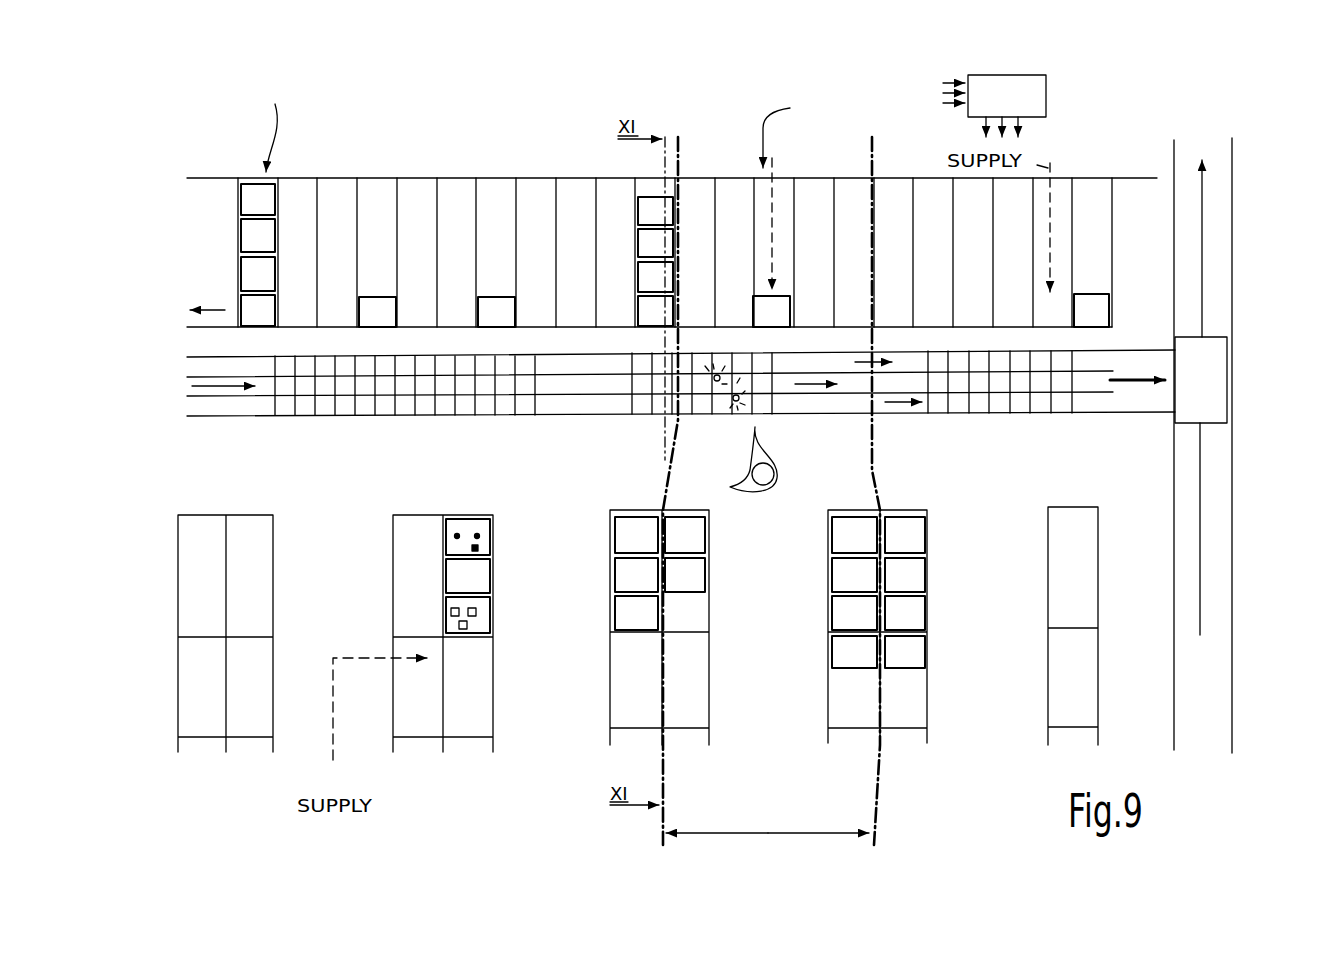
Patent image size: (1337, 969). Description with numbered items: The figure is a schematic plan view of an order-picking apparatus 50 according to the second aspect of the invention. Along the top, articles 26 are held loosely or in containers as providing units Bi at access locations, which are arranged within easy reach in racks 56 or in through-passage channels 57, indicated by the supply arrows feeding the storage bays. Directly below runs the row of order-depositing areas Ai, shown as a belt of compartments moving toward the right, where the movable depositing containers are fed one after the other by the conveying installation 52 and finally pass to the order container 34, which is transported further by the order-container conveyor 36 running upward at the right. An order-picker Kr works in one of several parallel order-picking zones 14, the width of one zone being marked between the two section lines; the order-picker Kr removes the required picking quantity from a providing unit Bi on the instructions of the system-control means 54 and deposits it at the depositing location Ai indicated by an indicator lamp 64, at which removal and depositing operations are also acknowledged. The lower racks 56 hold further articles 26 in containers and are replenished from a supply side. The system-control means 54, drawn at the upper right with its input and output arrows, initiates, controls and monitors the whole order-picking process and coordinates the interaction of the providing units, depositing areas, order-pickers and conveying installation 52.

The order-picking zone 14 is at (785, 838).
The article 26 is at (477, 534).
The order-depositing area 34 is at (1228, 386).
The order-container conveyor 36 is at (1232, 215).
The order-picking apparatus 50 is at (1157, 128).
The conveying installation 52 is at (1246, 285).
The system-control means 54 is at (1030, 92).
The rack 56 is at (431, 775).
The through-passage channel 57 is at (1097, 140).
The indicator lamp 64 is at (735, 404).
The providing unit Bi is at (277, 310).
The order-depositing area Ai is at (423, 403).
The order-picker Kr is at (770, 456).